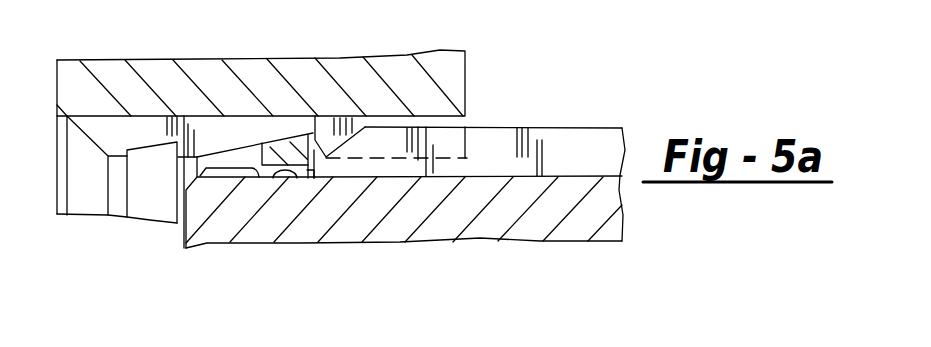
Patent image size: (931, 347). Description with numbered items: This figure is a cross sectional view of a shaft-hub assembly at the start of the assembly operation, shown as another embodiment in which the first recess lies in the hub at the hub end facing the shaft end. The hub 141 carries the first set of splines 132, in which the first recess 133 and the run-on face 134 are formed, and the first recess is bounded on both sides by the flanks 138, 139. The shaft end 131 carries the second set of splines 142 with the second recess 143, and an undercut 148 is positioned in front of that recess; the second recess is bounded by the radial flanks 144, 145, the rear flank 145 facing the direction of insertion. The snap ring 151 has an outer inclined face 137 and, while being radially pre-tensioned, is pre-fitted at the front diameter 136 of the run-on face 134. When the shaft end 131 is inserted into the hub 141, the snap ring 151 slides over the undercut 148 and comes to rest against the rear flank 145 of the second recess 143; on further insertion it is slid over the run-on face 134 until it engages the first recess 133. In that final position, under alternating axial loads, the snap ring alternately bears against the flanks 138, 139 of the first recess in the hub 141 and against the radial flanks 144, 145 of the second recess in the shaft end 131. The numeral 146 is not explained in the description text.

The shaft end 131 is at (480, 195).
The first set of splines 132 is at (110, 132).
The first recess 133 is at (163, 198).
The run-on face 134 is at (221, 148).
The front diameter 136 is at (315, 132).
The outer inclined face 137 is at (292, 150).
The flank 138 is at (164, 125).
The flank 139 is at (130, 223).
The hub 141 is at (68, 83).
The second set of splines 142 is at (552, 155).
The second recess 143 is at (299, 172).
The radial flank 144 is at (262, 178).
The rear flank 145 is at (309, 182).
The O-ring 146 is at (295, 180).
The undercut 148 is at (188, 222).
The snap ring 151 is at (283, 158).